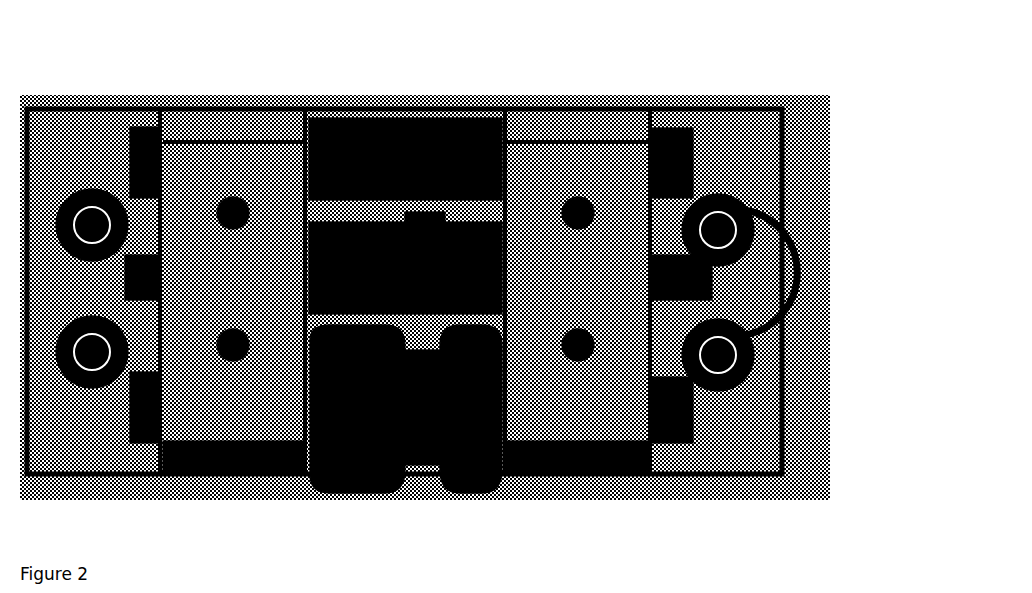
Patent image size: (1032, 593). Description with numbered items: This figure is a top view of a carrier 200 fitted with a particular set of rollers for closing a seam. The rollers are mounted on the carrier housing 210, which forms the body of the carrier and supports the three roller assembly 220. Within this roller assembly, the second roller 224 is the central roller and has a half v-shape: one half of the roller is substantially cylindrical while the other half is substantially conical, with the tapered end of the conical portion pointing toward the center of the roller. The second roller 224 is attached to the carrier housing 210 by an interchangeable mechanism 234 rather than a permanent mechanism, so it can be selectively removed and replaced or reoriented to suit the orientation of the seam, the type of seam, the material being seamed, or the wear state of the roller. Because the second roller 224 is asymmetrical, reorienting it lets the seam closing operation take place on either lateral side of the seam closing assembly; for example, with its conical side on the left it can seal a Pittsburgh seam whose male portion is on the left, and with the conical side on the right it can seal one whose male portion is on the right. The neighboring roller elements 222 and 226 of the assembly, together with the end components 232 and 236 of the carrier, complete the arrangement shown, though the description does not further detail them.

The test fixture assembly 200 is at (85, 140).
The carrier housing 210 is at (215, 165).
The three roller assembly 220 is at (428, 288).
The second plate 222 is at (462, 150).
The second roller 224 is at (500, 266).
The rollers 226 is at (483, 480).
The end block 232 is at (778, 313).
The interchangeable mechanism 234 is at (730, 275).
The lower block 236 is at (690, 440).